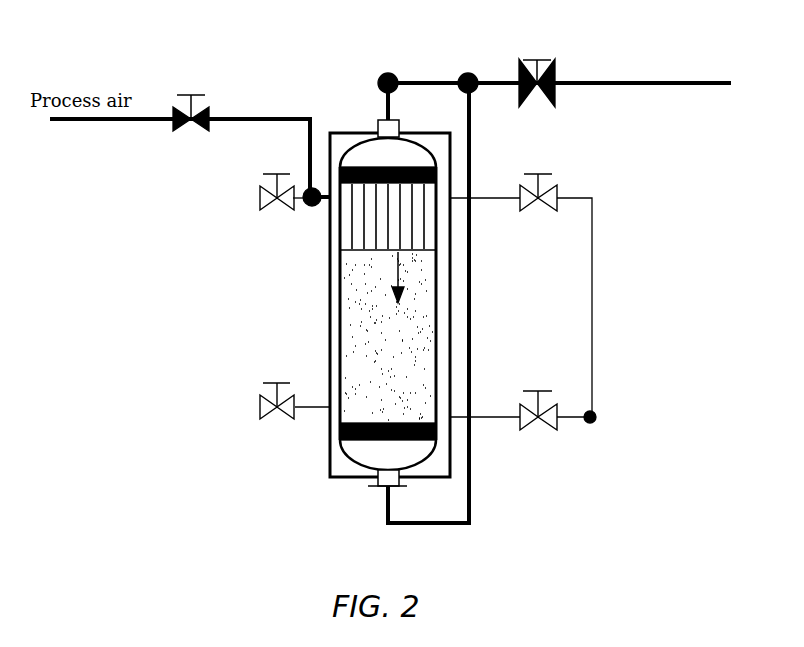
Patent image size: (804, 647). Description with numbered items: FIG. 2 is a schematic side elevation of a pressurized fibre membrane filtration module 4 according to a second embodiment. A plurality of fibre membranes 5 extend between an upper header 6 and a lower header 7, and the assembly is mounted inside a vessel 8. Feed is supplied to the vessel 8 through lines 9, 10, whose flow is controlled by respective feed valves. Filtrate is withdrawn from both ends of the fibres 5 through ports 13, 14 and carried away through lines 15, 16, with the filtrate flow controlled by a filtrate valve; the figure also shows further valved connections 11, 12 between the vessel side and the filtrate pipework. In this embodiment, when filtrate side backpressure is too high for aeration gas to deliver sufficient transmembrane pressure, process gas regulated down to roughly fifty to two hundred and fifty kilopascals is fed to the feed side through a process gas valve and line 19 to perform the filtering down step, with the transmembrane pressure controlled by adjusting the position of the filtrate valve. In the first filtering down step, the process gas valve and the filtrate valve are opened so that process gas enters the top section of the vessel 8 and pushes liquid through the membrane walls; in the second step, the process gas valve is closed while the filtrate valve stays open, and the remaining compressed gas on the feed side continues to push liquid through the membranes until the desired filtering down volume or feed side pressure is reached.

The pressurized fibre membrane filtration module 4 is at (340, 277).
The fibre membranes 5 is at (405, 217).
The upper header 6 is at (364, 164).
The lower header 7 is at (420, 440).
The vessel 8 is at (330, 288).
The line 9 is at (317, 403).
The line 10 is at (297, 183).
The line with valve AV5 11 is at (490, 196).
The line with valve AV4 12 is at (488, 419).
The port 13 is at (383, 121).
The port 14 is at (377, 483).
The line 15 is at (432, 83).
The line 16 is at (472, 360).
The line 19 is at (242, 117).